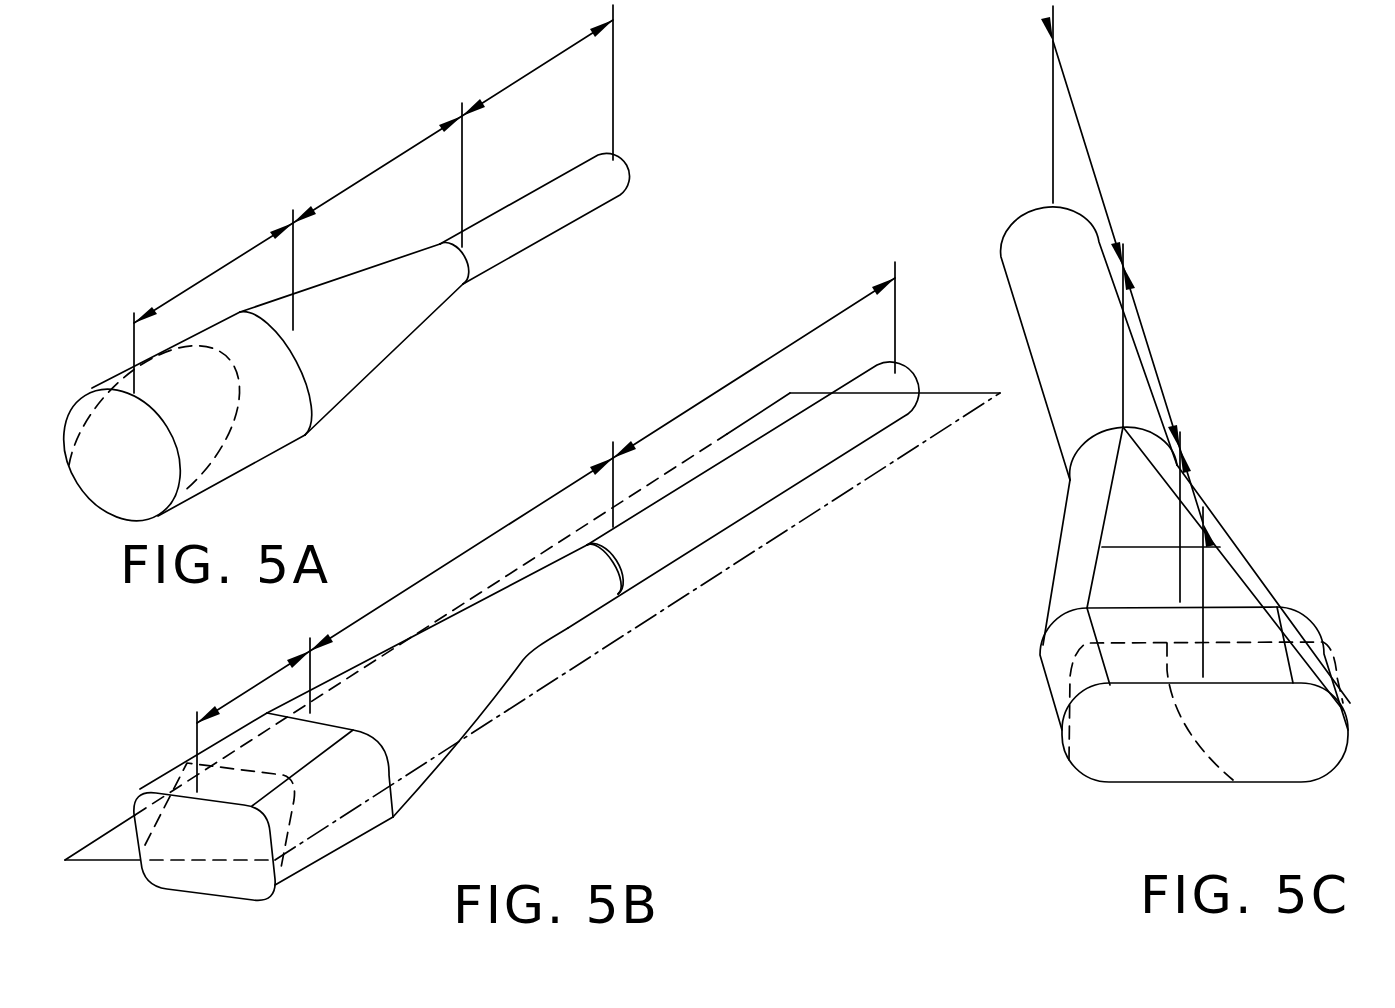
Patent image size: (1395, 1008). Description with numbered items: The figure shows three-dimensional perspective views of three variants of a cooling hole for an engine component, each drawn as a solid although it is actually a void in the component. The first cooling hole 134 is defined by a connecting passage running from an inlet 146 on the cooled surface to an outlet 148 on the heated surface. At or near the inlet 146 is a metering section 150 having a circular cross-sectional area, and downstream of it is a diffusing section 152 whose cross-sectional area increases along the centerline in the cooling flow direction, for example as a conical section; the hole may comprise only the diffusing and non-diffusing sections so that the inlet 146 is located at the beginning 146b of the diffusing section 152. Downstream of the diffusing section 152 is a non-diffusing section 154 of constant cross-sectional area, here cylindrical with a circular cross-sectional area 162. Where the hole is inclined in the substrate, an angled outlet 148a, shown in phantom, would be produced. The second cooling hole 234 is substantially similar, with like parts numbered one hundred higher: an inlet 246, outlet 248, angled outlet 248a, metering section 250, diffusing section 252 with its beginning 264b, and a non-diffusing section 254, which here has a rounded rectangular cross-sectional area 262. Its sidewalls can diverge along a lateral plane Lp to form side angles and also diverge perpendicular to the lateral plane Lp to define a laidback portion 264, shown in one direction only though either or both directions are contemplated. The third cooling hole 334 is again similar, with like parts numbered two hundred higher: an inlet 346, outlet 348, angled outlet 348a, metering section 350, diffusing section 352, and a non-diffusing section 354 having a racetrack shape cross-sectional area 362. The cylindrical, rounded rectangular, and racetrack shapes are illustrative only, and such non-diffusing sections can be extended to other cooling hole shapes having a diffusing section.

In FIG. 5A, the cooling hole 134 is at (368, 364).
In FIG. 5A, the inlet 146 is at (581, 218).
In FIG. 5A, the beginning of the diffusing section 146b is at (410, 339).
In FIG. 5A, the outlet 148 is at (159, 444).
In FIG. 5A, the angled outlet 148a is at (212, 421).
In FIG. 5A, the metering section 150 is at (535, 82).
In FIG. 5A, the diffusing section 152 is at (372, 175).
In FIG. 5A, the non-diffusing section 154 is at (204, 301).
In FIG. 5A, the circular cross-sectional area 162 is at (314, 378).
In FIG. 5B, the cooling hole 234 is at (556, 624).
In FIG. 5B, the inlet 246 is at (780, 475).
In FIG. 5B, the outlet 248 is at (256, 819).
In FIG. 5B, the angled outlet 248a is at (295, 824).
In FIG. 5B, the metering section 250 is at (754, 360).
In FIG. 5B, the diffusing section 252 is at (461, 546).
In FIG. 5B, the non-diffusing section 254 is at (241, 715).
In FIG. 5B, the rounded rectangular cross-sectional area 262 is at (368, 773).
In FIG. 5B, the laidback portion 264 is at (427, 681).
In FIG. 5B, the beginning of the diffusing section 264b is at (703, 580).
In FIG. 5B, the lateral plane Lp is at (637, 626).
In FIG. 5C, the cooling hole 334 is at (1138, 485).
In FIG. 5C, the inlet 346 is at (1048, 313).
In FIG. 5C, the outlet 348 is at (1194, 715).
In FIG. 5C, the angled outlet 348a is at (1212, 732).
In FIG. 5C, the metering section 350 is at (1120, 216).
In FIG. 5C, the diffusing section 352 is at (1184, 434).
In FIG. 5C, the non-diffusing section 354 is at (1235, 563).
In FIG. 5C, the racetrack shape cross-sectional area 362 is at (1145, 568).